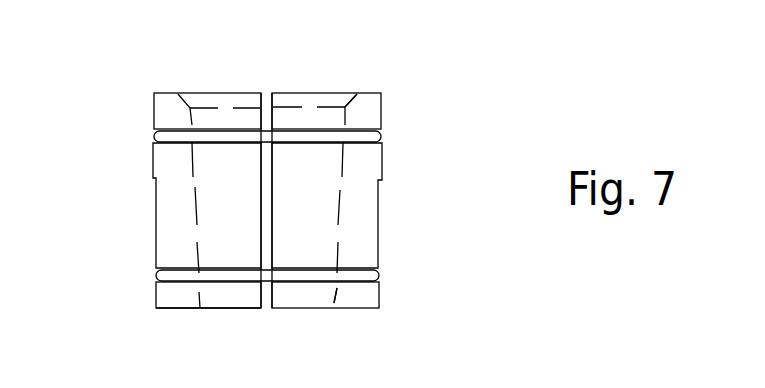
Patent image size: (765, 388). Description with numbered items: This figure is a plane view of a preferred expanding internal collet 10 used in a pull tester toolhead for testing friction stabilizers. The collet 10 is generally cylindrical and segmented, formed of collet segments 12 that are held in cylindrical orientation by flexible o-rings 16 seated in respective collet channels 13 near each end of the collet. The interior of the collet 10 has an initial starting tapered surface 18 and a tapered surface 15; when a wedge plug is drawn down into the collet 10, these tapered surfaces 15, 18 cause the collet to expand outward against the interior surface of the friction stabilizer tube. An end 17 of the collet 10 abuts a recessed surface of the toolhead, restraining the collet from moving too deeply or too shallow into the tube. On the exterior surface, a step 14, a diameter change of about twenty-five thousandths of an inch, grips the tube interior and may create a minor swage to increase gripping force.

The expanding internal collet 10 is at (395, 152).
The collet segment 12 is at (152, 128).
The collet channel 13 is at (153, 142).
The step 14 is at (153, 178).
The tapered surface 15 is at (337, 288).
The flexible o-ring 16 is at (153, 133).
The end 17 is at (182, 308).
The initial starting tapered surface 18 is at (353, 97).